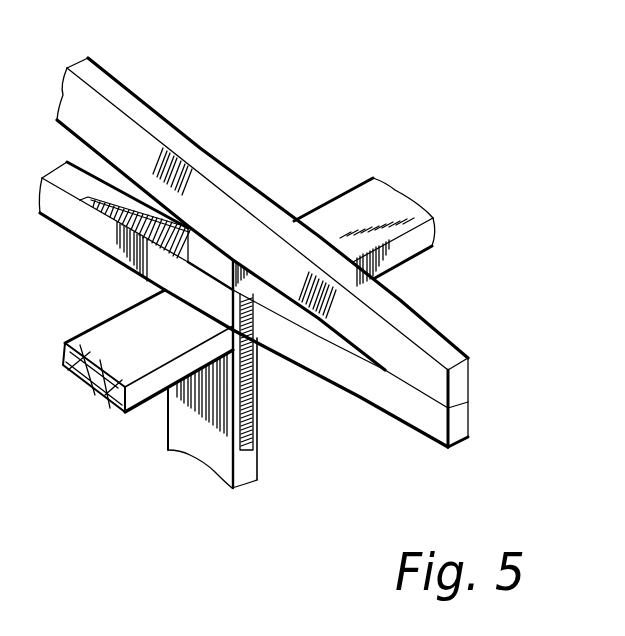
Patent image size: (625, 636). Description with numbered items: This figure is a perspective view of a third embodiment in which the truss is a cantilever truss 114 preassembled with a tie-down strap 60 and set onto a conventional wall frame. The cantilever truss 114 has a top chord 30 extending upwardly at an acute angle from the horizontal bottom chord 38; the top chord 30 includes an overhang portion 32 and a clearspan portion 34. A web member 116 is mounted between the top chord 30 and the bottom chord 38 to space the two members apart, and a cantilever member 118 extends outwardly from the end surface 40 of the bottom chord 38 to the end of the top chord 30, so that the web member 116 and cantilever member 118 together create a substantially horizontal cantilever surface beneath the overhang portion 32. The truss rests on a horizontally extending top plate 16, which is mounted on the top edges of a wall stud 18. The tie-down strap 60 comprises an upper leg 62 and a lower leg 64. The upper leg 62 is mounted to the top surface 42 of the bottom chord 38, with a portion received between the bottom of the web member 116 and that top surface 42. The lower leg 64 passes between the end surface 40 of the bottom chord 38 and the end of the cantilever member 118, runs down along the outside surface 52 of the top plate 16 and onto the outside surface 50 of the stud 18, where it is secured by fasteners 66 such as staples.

The top plate 16 is at (358, 182).
The stud 18 is at (168, 437).
The top chord 30 is at (133, 105).
The overhang portion 32 is at (457, 350).
The clearspan portion 34 is at (185, 128).
The bottom chord 38 is at (100, 253).
The end surface 40 is at (233, 298).
The top surface 42 is at (67, 162).
The outside surface 50 is at (257, 462).
The outside surface 52 is at (433, 248).
The tie-down strap 60 is at (170, 258).
The upper leg 62 is at (77, 200).
The lower leg 64 is at (255, 424).
The fasteners 66 is at (256, 393).
The cantilever truss 114 is at (286, 120).
The web member 116 is at (213, 253).
The cantilever member 118 is at (409, 428).